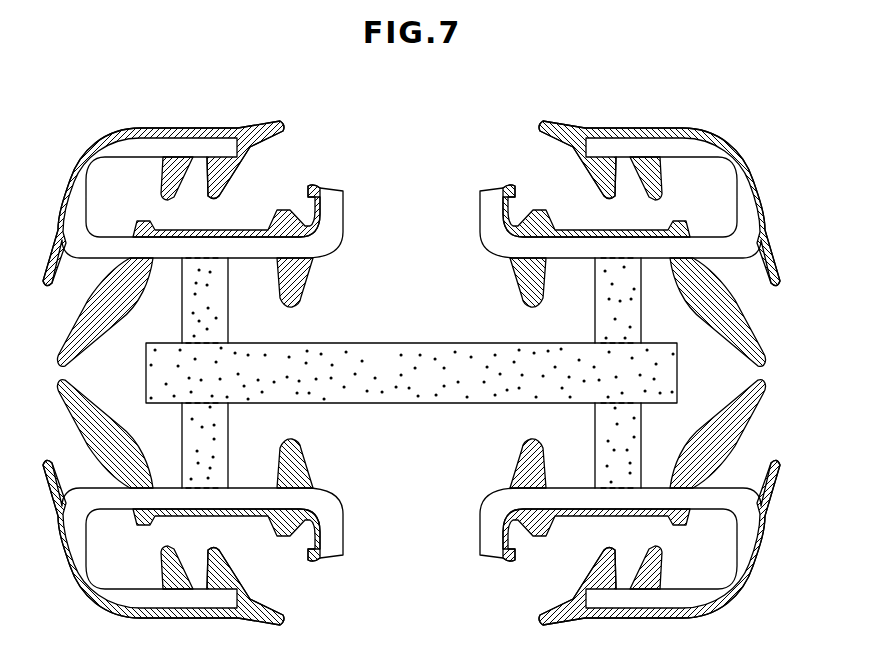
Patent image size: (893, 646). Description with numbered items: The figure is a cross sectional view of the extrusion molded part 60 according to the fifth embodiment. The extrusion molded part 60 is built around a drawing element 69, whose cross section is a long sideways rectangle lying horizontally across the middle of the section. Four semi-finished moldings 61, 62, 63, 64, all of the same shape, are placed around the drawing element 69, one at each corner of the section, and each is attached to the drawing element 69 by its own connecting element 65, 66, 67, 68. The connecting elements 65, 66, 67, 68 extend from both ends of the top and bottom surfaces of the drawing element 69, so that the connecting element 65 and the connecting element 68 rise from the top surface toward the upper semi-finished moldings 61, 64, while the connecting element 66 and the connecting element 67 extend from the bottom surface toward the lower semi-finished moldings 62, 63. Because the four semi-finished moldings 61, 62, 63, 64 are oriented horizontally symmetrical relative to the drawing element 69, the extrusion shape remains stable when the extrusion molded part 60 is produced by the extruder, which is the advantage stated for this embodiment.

The extrusion molded part 60 is at (418, 163).
The semi-finished molding 61 is at (108, 160).
The semi-finished molding 62 is at (108, 586).
The semi-finished molding 63 is at (715, 586).
The semi-finished molding 64 is at (715, 160).
The connecting element 65 is at (210, 307).
The connecting element 66 is at (212, 440).
The connecting element 67 is at (610, 440).
The connecting element 68 is at (610, 302).
The drawing element 69 is at (413, 356).